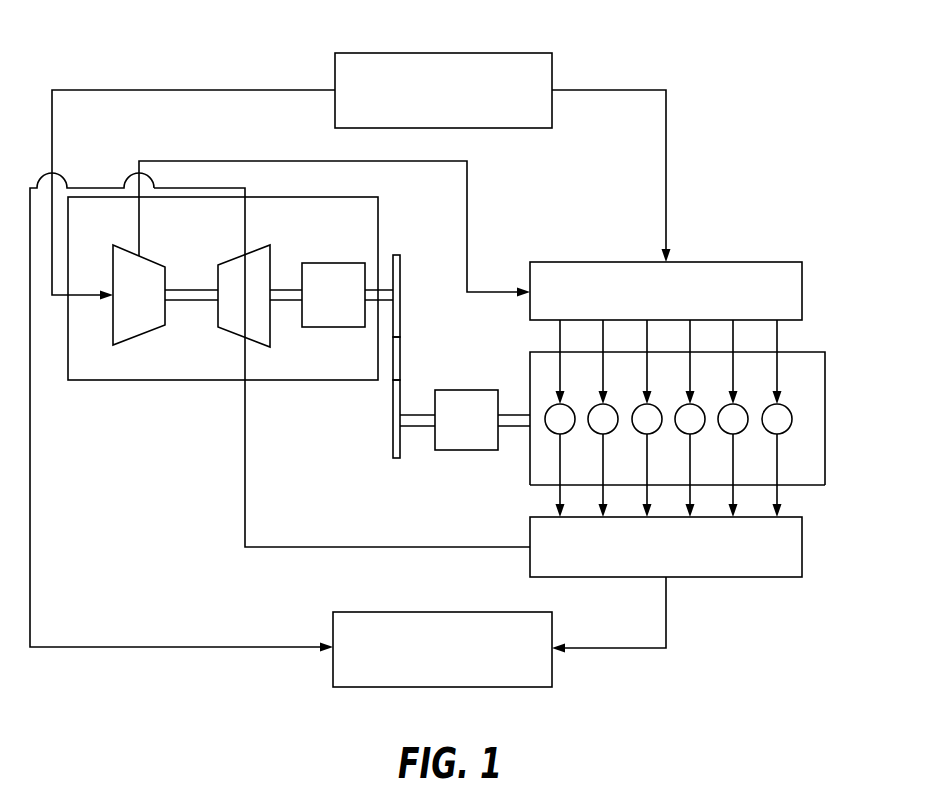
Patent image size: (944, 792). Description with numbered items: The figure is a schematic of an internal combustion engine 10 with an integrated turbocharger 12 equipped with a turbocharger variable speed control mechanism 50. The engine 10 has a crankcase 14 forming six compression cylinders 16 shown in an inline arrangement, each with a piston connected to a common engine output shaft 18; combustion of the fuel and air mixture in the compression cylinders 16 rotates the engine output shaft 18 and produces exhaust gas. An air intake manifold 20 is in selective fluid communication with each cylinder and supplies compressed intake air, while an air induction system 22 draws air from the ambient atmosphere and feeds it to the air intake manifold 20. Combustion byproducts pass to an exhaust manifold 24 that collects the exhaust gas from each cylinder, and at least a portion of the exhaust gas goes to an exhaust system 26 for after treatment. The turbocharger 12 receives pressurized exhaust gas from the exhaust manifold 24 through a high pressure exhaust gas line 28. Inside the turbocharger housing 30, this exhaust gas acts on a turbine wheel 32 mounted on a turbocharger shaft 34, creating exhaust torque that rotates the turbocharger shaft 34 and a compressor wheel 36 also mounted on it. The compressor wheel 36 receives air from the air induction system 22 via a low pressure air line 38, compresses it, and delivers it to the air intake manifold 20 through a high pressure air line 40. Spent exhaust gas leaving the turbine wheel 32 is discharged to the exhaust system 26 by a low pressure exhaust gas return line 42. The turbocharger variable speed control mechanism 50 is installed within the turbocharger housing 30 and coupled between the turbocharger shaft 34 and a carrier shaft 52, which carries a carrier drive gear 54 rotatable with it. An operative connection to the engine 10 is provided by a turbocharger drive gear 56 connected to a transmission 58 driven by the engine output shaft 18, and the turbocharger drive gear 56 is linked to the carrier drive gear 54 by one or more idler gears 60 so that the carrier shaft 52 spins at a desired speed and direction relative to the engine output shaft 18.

The internal combustion engine 10 is at (825, 418).
The turbocharger 12 is at (103, 461).
The crankcase 14 is at (812, 485).
The compression cylinders 16 is at (782, 405).
The engine output shaft 18 is at (513, 414).
The air intake manifold 20 is at (720, 262).
The air induction system 22 is at (460, 53).
The exhaust manifold 24 is at (703, 577).
The exhaust system 26 is at (408, 612).
The high pressure exhaust gas line 28 is at (245, 503).
The turbocharger housing 30 is at (157, 382).
The turbine wheel 32 is at (270, 272).
The turbocharger shaft 34 is at (190, 290).
The compressor wheel 36 is at (113, 272).
The low pressure air line 38 is at (193, 90).
The high pressure air line 40 is at (302, 160).
The low pressure exhaust gas return line 42 is at (155, 648).
The turbocharger variable speed control mechanism 50 is at (330, 263).
The carrier shaft 52 is at (383, 288).
The carrier drive gear 54 is at (401, 303).
The turbocharger drive gear 56 is at (393, 452).
The transmission 58 is at (468, 450).
The idler gears 60 is at (401, 357).